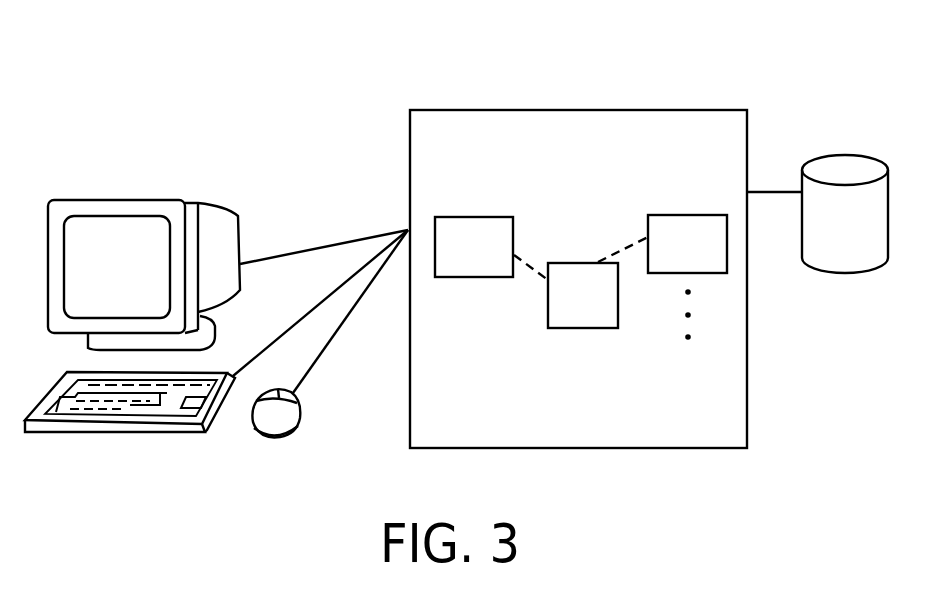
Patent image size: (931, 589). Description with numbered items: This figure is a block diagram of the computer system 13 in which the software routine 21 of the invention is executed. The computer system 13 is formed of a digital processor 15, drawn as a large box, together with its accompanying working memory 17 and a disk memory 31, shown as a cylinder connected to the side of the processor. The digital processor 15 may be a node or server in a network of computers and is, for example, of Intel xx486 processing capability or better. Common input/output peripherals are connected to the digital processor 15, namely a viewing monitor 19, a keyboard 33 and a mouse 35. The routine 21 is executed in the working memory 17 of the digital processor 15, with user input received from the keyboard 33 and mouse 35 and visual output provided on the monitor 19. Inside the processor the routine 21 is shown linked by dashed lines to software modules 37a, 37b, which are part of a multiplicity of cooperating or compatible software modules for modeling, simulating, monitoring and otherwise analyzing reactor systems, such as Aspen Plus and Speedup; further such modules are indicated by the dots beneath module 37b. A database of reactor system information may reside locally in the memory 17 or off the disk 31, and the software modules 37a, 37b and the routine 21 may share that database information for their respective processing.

The computer system 13 is at (334, 100).
The digital processor 15 is at (582, 108).
The working memory 17 is at (567, 166).
The viewing monitor 19 is at (147, 198).
The software routine 21 is at (603, 312).
The disk memory 31 is at (864, 237).
The keyboard 33 is at (155, 435).
The mouse 35 is at (300, 417).
The software module 37a is at (500, 260).
The software module 37b is at (713, 258).